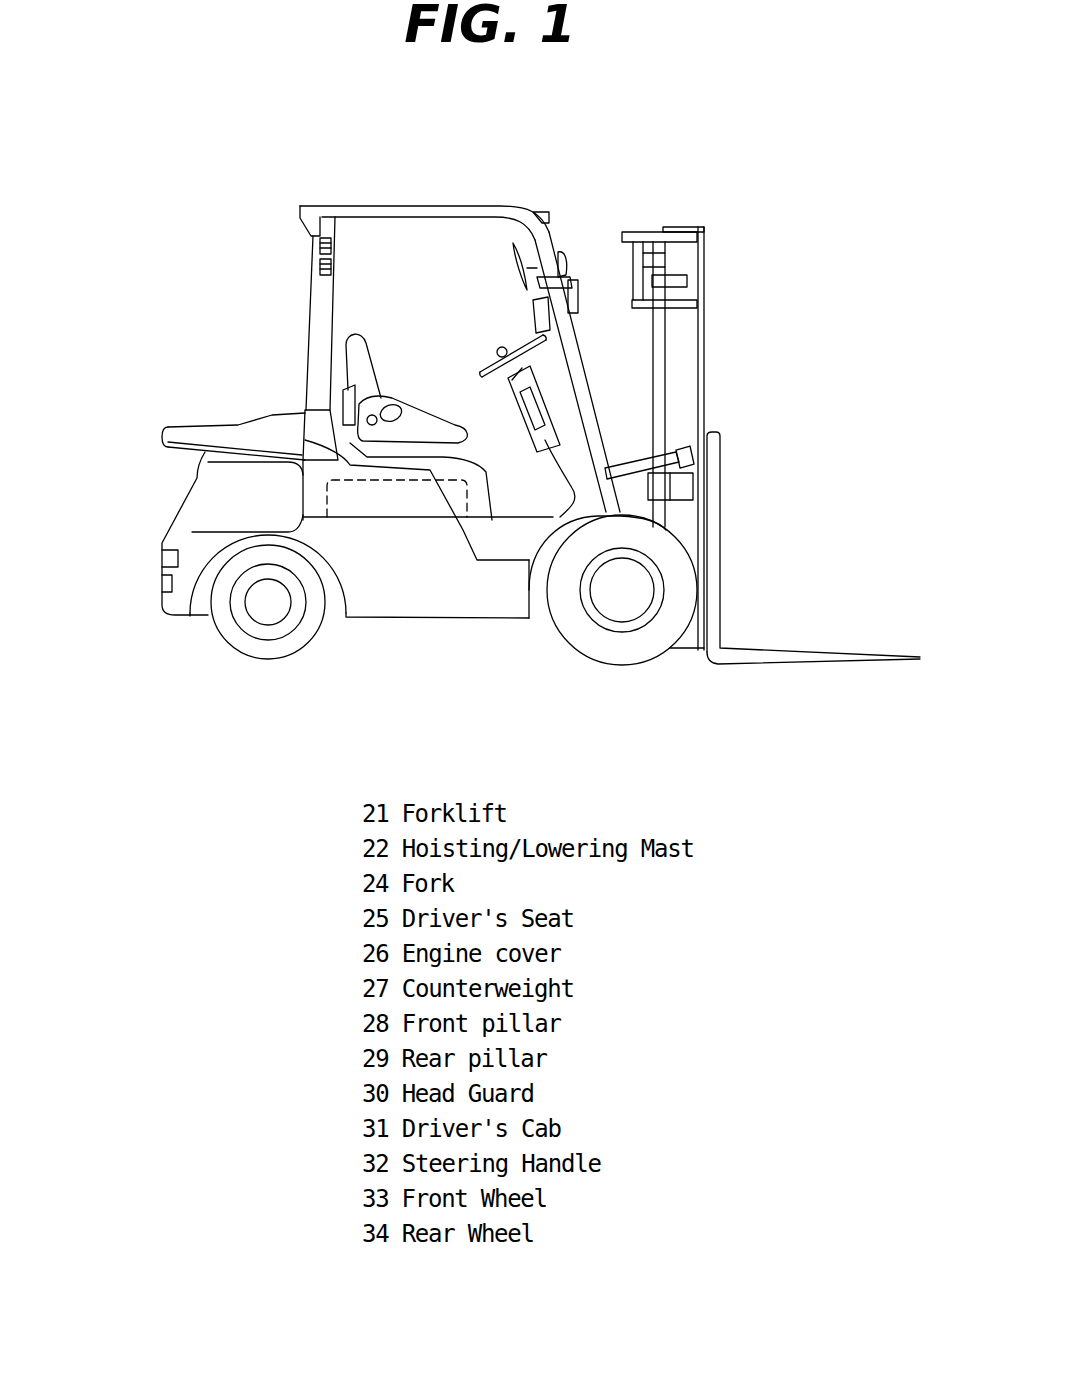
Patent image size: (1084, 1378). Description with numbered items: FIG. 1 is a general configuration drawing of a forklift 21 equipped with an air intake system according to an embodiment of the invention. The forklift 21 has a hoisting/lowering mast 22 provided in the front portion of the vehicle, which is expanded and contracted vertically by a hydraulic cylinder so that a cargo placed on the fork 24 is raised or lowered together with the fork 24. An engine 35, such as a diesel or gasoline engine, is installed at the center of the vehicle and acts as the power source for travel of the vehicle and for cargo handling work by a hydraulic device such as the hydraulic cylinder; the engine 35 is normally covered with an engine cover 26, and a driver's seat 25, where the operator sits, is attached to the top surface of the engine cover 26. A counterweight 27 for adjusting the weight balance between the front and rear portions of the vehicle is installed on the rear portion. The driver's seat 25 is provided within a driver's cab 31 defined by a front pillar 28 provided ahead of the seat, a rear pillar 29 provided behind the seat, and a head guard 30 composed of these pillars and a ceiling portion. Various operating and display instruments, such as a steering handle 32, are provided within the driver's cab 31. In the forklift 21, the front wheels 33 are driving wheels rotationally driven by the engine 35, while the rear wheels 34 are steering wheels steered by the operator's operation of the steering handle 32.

The forklift 21 is at (495, 419).
The hoisting/lowering mast 22 is at (705, 372).
The fork 24 is at (753, 653).
The driver's seat 25 is at (398, 396).
The engine cover 26 is at (480, 470).
The counterweight 27 is at (205, 500).
The front pillar 28 is at (573, 356).
The rear pillar 29 is at (323, 297).
The head guard 30 is at (468, 213).
The driver's cab 31 is at (378, 240).
The steering handle 32 is at (530, 367).
The front wheels 33 is at (633, 650).
The rear wheels 34 is at (247, 647).
The engine 35 is at (337, 457).